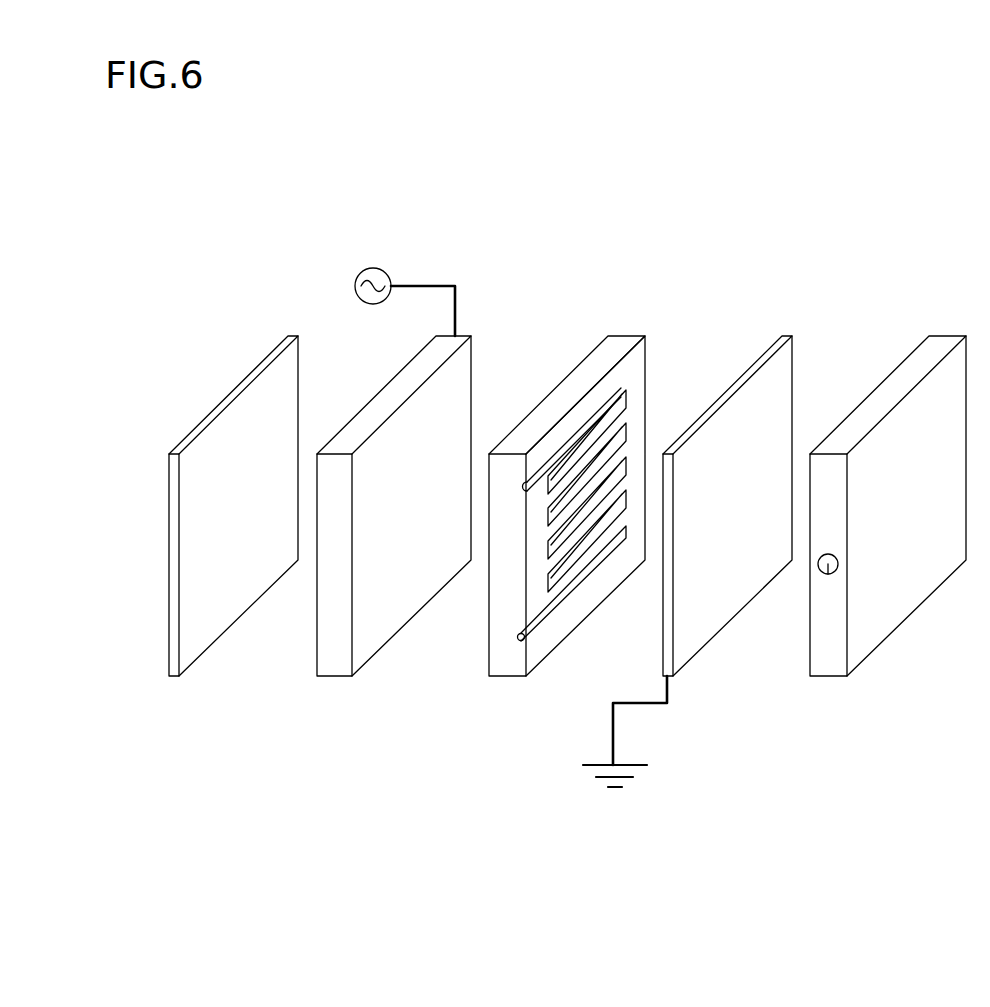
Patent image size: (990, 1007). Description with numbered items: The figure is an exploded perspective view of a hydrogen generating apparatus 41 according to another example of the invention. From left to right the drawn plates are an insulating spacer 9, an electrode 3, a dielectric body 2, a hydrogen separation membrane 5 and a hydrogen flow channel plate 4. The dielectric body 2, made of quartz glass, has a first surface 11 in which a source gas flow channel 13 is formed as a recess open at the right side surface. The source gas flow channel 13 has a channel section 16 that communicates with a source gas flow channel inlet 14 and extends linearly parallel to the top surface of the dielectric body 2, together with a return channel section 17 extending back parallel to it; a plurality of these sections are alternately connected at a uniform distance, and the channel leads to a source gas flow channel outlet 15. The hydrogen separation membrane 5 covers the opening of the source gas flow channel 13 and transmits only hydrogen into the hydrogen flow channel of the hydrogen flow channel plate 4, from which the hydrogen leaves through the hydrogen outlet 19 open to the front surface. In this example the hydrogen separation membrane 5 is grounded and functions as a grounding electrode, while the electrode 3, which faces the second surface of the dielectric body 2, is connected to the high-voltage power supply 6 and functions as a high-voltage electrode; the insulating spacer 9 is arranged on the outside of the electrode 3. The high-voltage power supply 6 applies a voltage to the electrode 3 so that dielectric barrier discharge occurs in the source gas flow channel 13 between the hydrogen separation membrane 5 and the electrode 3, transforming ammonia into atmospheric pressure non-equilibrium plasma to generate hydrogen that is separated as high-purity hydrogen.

The hydrogen generating apparatus 41 is at (706, 209).
The insulating spacer 9 is at (240, 389).
The electrode 3 is at (397, 390).
The high-voltage power supply 6 is at (361, 273).
The dielectric body 2 is at (567, 390).
The first surface 11 is at (640, 370).
The source gas flow channel 13 is at (586, 578).
The channel section of the source gas flow channel 16 is at (578, 437).
The source gas flow channel inlet 14 is at (523, 486).
The return channel section of the source gas flow channel 17 is at (603, 437).
The source gas flow channel outlet 15 is at (519, 642).
The hydrogen separation membrane 5 is at (733, 390).
The hydrogen flow channel plate 4 is at (893, 390).
The hydrogen outlet 19 is at (829, 573).